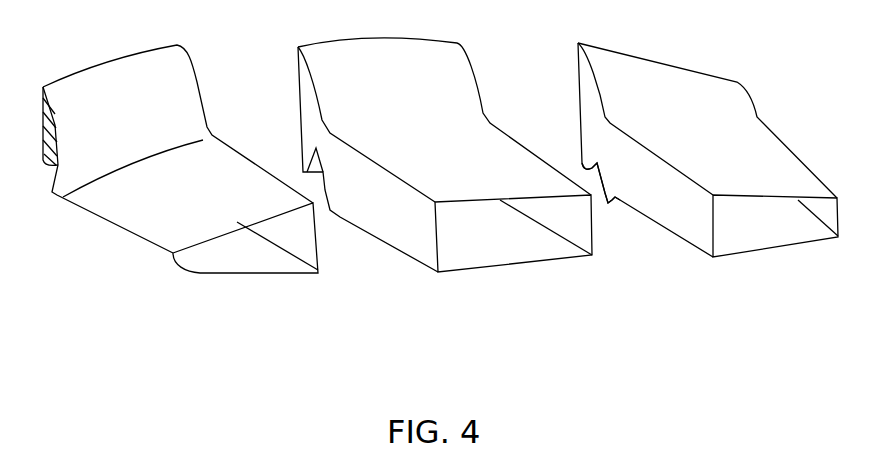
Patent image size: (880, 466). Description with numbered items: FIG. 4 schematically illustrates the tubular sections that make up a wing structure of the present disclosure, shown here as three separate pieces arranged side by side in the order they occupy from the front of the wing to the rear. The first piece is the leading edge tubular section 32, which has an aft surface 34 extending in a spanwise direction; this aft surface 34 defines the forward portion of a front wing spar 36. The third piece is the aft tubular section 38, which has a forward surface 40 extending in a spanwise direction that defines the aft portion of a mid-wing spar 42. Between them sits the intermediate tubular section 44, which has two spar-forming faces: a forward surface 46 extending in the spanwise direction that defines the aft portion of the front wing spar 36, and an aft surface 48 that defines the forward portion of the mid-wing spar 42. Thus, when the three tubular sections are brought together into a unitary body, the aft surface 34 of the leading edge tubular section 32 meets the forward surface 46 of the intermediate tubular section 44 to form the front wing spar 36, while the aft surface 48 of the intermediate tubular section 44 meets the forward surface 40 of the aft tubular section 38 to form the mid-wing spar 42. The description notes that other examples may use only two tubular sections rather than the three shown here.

The leading edge tubular section 32 is at (160, 183).
The aft surface 34 is at (282, 222).
The front wing spar 36 is at (307, 258).
The aft tubular section 38 is at (722, 148).
The forward surface 40 is at (733, 230).
The mid-wing spar 42 is at (705, 248).
The intermediate tubular section 44 is at (457, 130).
The forward surface 46 is at (462, 247).
The aft surface 48 is at (568, 232).